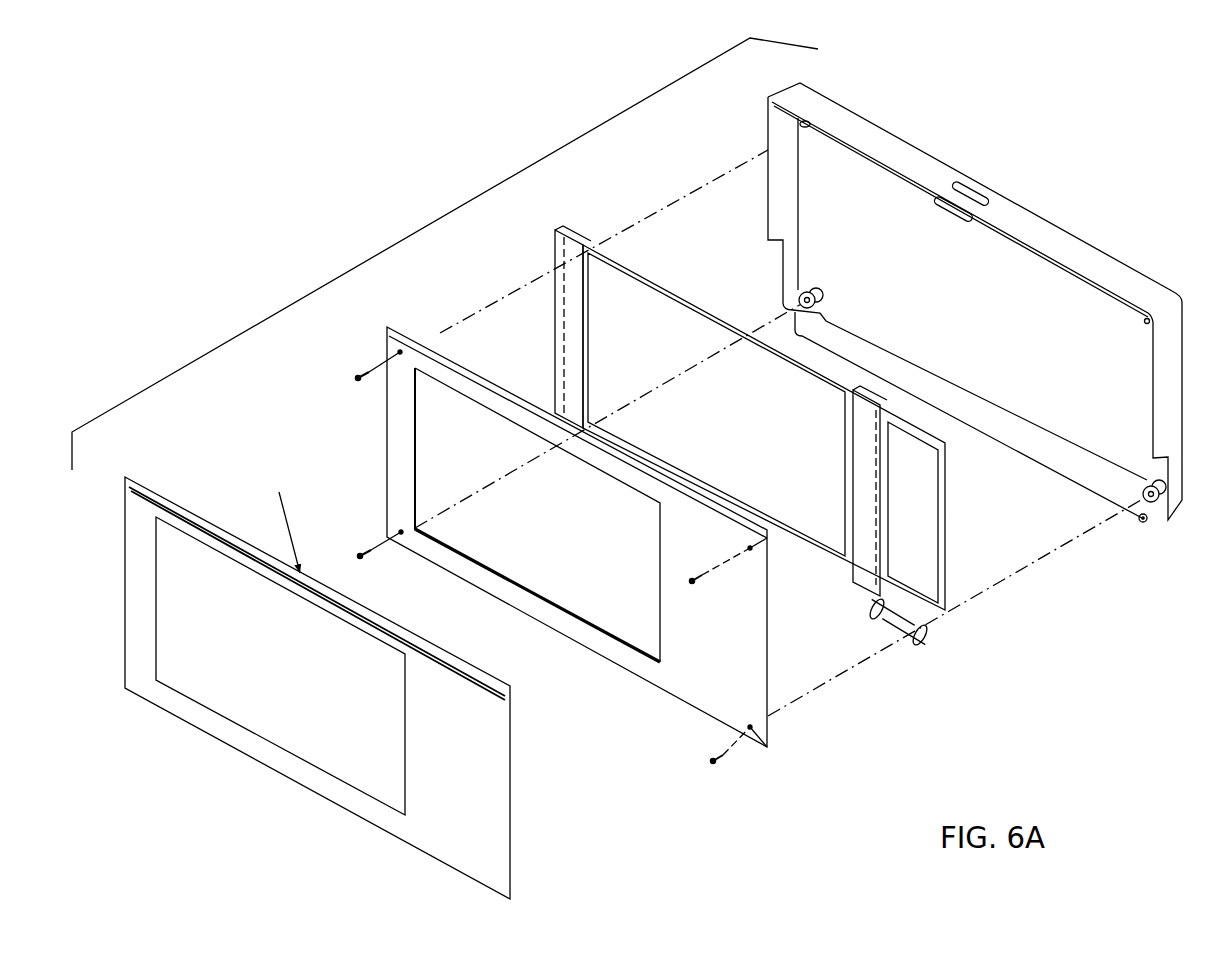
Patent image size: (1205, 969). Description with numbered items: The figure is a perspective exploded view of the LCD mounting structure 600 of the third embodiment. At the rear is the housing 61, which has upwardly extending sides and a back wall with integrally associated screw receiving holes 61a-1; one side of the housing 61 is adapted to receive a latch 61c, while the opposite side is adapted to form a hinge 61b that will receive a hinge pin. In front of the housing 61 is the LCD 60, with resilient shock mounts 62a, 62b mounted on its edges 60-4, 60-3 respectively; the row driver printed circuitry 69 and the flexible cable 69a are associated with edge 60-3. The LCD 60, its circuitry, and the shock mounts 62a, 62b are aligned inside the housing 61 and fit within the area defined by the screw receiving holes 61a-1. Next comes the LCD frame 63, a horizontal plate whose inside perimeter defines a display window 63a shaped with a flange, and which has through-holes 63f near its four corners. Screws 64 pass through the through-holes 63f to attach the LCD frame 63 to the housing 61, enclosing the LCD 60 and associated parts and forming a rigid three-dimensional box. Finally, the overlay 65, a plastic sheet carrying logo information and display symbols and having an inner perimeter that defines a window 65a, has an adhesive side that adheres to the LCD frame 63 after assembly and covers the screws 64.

The LCD mounting structure 600 is at (320, 288).
The overlay 65 is at (344, 683).
The window 65a is at (281, 665).
The LCD frame 63 is at (608, 549).
The display window 63a is at (582, 560).
The through-holes 63f is at (405, 356).
The screws 64 is at (356, 370).
The LCD 60 is at (653, 272).
The edge of LCD 60-4 is at (573, 225).
The resilient shock mount 62a is at (572, 346).
The edge of LCD 60-3 is at (888, 480).
The resilient shock mount 62b is at (863, 590).
The row driver printed circuitry 69 is at (933, 647).
The flexible cable 69a is at (923, 647).
The housing 61 is at (983, 327).
The latch 61c is at (940, 210).
The screw receiving holes 61a-1 is at (823, 290).
The hinge 61b is at (1150, 523).